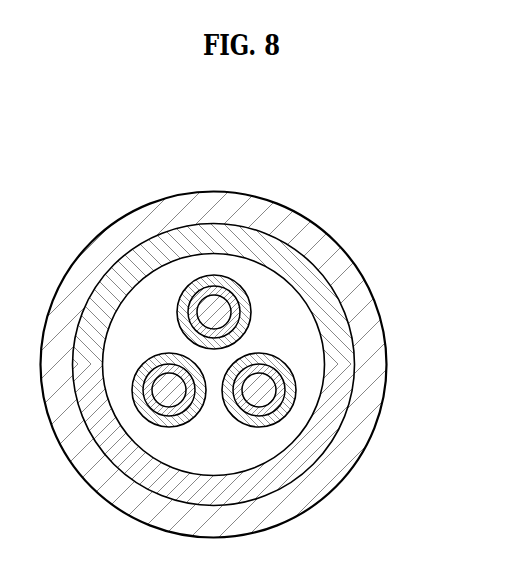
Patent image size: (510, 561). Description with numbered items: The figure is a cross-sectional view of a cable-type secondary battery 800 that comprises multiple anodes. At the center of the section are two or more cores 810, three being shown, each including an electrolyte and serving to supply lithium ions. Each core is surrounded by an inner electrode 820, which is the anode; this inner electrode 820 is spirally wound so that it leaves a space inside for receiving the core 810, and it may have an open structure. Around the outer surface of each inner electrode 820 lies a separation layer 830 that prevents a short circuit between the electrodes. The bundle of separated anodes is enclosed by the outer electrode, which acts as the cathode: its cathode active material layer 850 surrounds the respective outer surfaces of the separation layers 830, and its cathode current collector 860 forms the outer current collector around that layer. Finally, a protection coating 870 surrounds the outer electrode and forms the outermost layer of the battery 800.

The cable-type secondary battery 800 is at (153, 168).
The core for supplying lithium ions 810 is at (259, 389).
The inner electrode 820 is at (276, 370).
The separation layer 830 is at (274, 357).
The cathode active material layer 850 is at (227, 263).
The cathode current collector 860 is at (262, 243).
The protection coating 870 is at (300, 230).